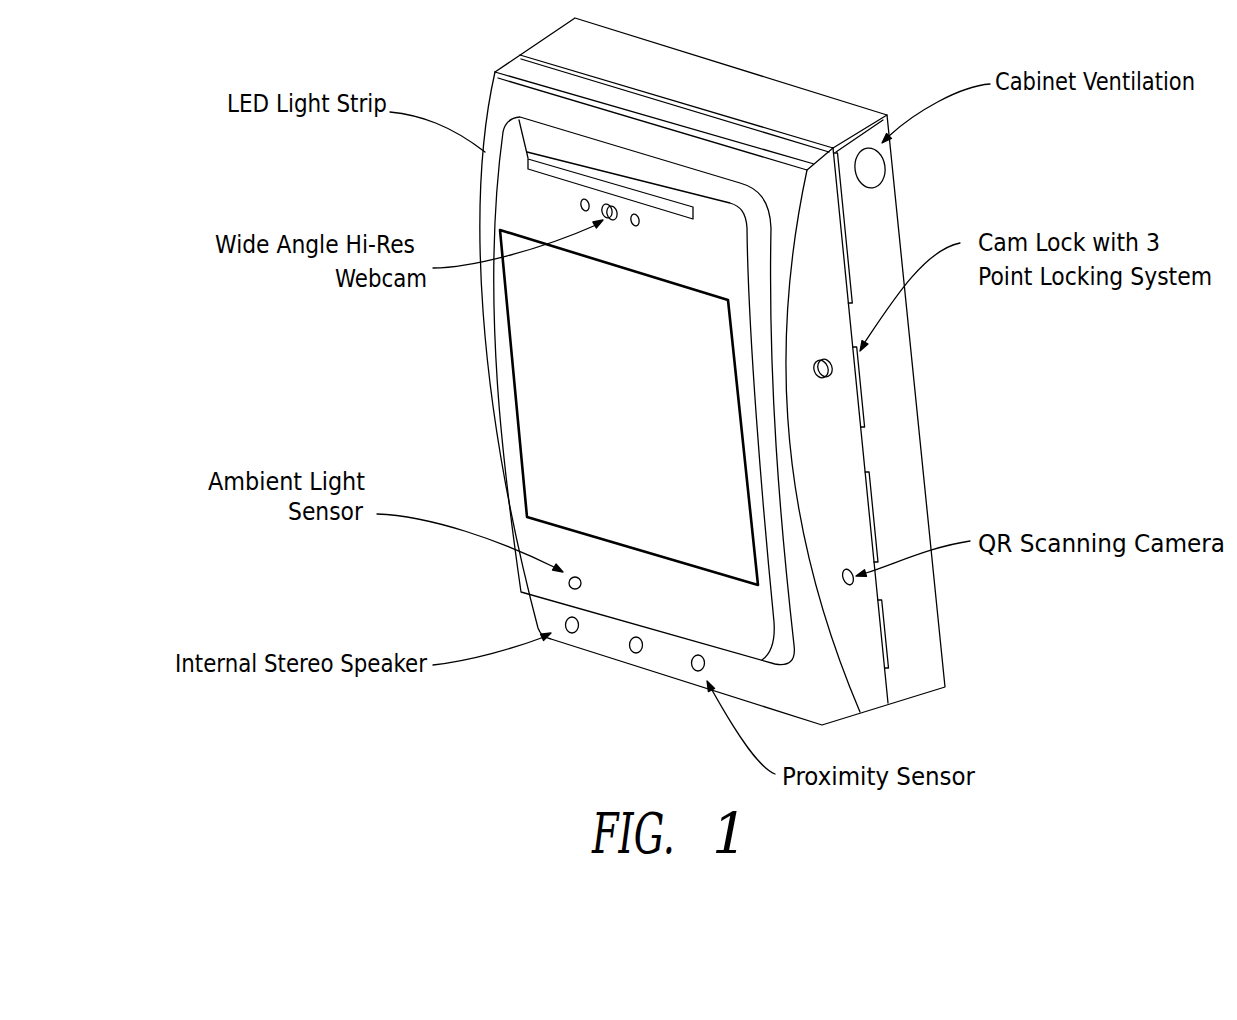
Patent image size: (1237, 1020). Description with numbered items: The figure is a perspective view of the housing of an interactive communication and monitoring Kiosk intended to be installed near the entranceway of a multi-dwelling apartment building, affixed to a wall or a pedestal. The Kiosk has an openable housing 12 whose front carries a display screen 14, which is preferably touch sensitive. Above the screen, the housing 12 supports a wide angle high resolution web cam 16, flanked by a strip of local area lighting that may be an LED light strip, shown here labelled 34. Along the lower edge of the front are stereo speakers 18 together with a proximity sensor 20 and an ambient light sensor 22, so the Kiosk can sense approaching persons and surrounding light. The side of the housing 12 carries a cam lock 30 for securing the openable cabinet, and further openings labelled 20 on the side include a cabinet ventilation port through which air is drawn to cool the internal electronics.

The housing 12 is at (893, 452).
The display screen 14 is at (548, 390).
The wide angle high resolution web cam 16 is at (603, 200).
The stereo speakers 18 is at (575, 657).
The proximity sensors 20 is at (698, 664).
The ambient light sensors 22 is at (568, 582).
The cam lock 30 is at (832, 373).
The LED light strip 34 is at (524, 163).